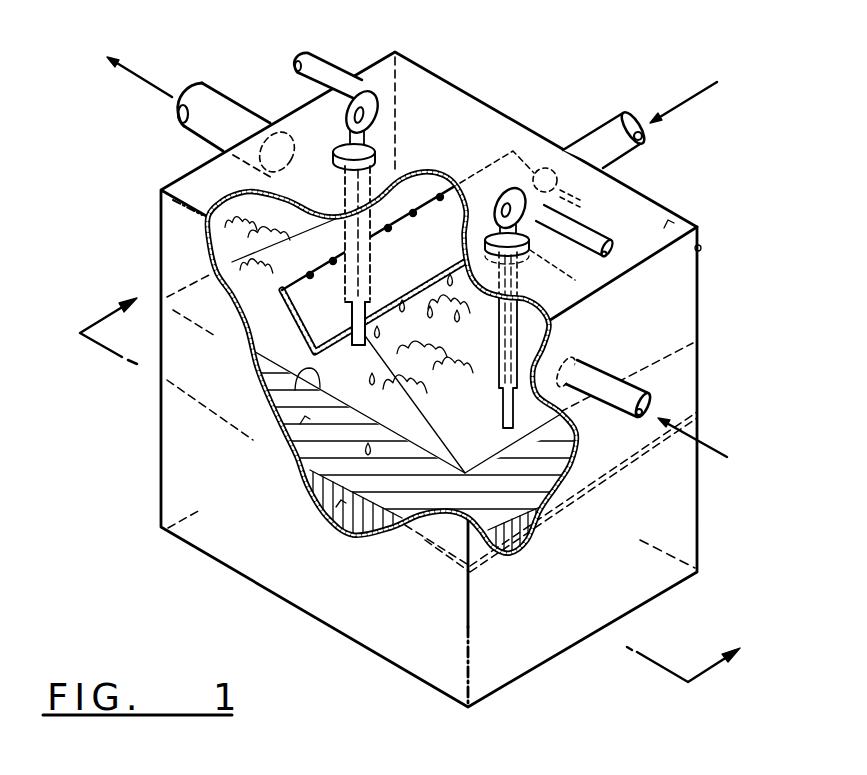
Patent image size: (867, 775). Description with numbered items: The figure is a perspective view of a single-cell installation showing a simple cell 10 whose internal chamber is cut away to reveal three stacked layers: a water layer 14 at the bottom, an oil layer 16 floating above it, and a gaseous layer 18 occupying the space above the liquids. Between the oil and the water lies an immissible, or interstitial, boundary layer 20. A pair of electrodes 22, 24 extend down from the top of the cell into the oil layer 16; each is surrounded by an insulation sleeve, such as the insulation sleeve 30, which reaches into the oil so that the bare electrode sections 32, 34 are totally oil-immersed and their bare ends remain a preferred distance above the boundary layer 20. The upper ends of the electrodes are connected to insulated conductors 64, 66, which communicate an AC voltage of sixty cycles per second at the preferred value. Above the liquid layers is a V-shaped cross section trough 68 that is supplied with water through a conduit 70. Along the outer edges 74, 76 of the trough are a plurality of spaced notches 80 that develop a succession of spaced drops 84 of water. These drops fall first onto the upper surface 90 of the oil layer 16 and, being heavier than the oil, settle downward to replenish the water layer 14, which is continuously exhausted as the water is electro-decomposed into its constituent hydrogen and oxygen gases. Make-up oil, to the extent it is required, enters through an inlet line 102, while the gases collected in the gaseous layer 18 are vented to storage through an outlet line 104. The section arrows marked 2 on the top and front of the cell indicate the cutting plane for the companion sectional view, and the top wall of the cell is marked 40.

The cell 10 is at (520, 105).
The water layer 14 is at (340, 503).
The oil layer 16 is at (305, 418).
The gaseous layer 18 is at (447, 363).
The immissible boundary layer 20 is at (352, 528).
The electrode 22 is at (348, 117).
The electrode 24 is at (498, 190).
The insulation sleeve 30 is at (505, 325).
The bare electrode section 32 is at (363, 333).
The bare electrode section 34 is at (577, 432).
The top wall 40 is at (672, 222).
The insulated conductor 64 is at (327, 72).
The insulated conductor 66 is at (585, 233).
The V-shaped cross section trough 68 is at (325, 262).
The conduit 70 is at (607, 137).
The outer edge of trough 74 is at (305, 272).
The outer edge of trough 76 is at (435, 270).
The spaced notches 80 is at (333, 261).
The spaced drops 84 is at (373, 385).
The upper surface of oil layer 90 is at (317, 373).
The inlet line 102 is at (647, 393).
The outlet line 104 is at (227, 113).
The section line 2- 2 is at (412, 480).